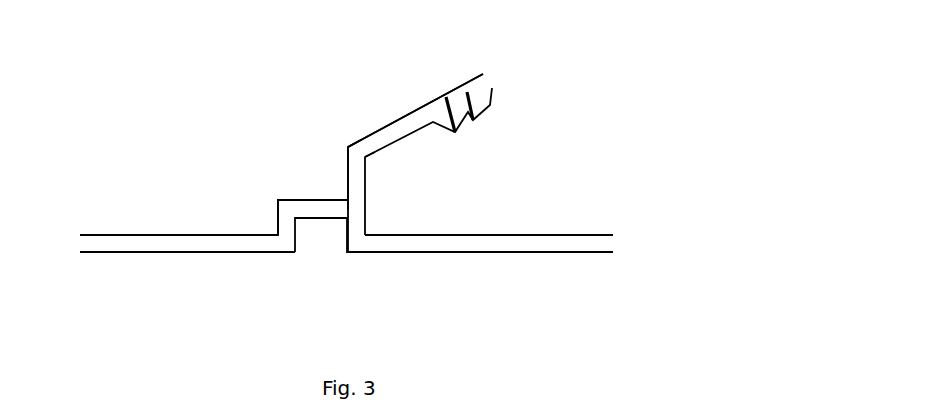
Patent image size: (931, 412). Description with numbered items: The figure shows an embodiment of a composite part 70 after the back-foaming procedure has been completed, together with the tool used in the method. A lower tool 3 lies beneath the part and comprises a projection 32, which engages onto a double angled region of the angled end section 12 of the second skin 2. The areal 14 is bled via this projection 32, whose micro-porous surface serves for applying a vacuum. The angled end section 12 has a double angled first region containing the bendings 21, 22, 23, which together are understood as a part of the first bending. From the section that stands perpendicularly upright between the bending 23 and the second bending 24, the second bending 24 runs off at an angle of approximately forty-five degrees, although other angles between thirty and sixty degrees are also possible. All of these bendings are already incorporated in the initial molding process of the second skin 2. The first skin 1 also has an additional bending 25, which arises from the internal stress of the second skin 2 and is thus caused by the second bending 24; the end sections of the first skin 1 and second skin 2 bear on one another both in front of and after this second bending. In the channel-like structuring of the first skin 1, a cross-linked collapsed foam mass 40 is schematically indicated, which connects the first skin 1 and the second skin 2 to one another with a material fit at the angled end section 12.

The first skin 1 is at (508, 233).
The second skin 2 is at (118, 234).
The lower tool 3 is at (191, 254).
The angled end section 12 is at (312, 198).
The areal 14 is at (333, 221).
The bending 21 is at (277, 233).
The bending 22 is at (276, 199).
The bending 23 is at (346, 198).
The second bending 24 is at (349, 146).
The additional bending 25 is at (373, 159).
The projection 32 is at (330, 255).
The cross-linked collapsed foam mass 40 is at (462, 92).
The composite part 70 is at (544, 182).